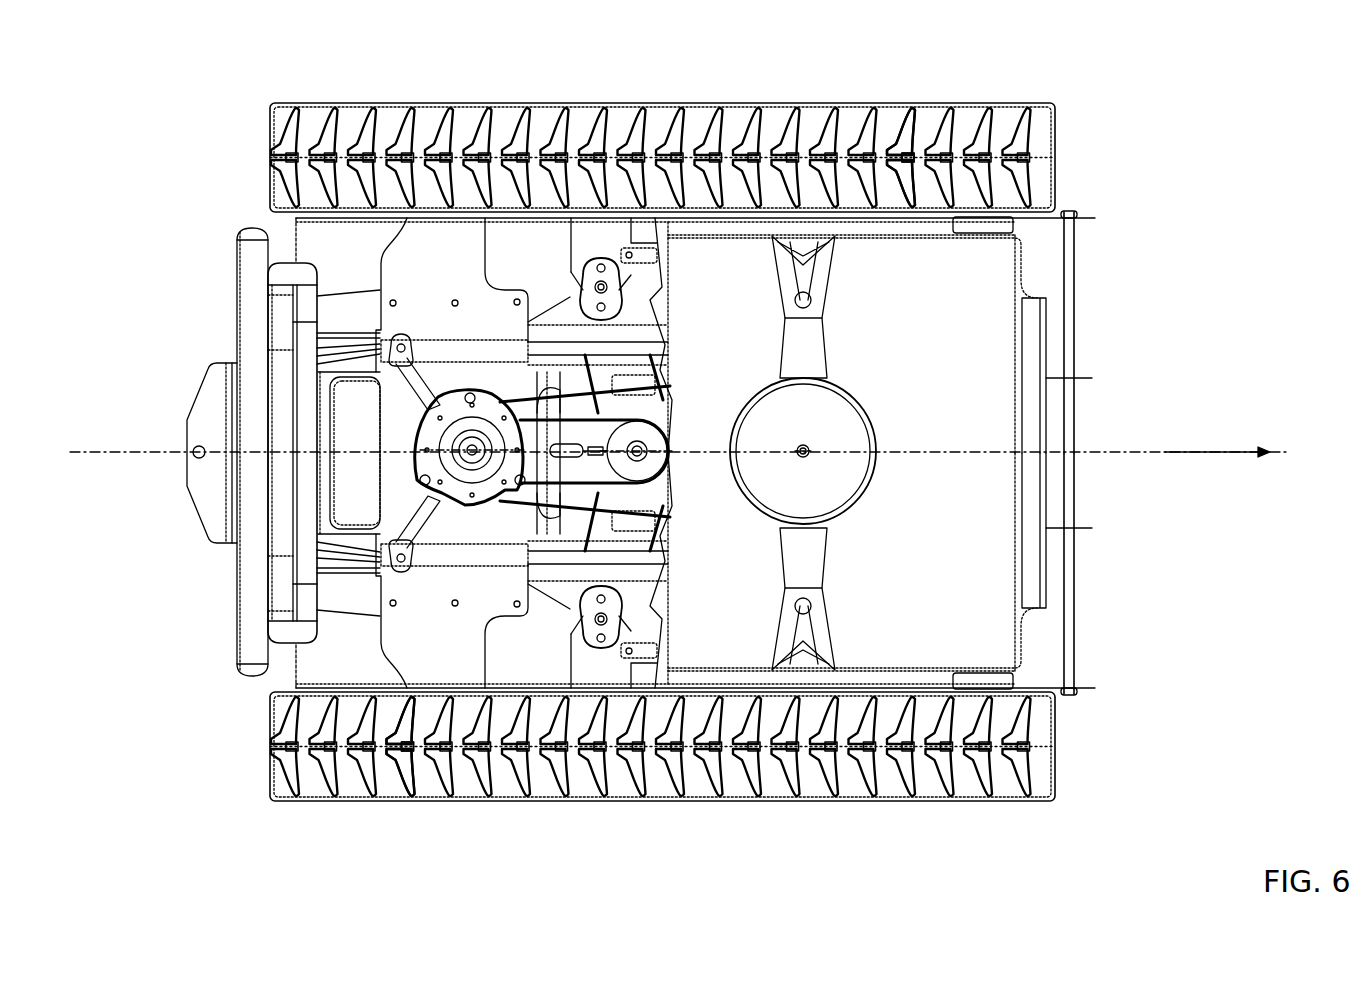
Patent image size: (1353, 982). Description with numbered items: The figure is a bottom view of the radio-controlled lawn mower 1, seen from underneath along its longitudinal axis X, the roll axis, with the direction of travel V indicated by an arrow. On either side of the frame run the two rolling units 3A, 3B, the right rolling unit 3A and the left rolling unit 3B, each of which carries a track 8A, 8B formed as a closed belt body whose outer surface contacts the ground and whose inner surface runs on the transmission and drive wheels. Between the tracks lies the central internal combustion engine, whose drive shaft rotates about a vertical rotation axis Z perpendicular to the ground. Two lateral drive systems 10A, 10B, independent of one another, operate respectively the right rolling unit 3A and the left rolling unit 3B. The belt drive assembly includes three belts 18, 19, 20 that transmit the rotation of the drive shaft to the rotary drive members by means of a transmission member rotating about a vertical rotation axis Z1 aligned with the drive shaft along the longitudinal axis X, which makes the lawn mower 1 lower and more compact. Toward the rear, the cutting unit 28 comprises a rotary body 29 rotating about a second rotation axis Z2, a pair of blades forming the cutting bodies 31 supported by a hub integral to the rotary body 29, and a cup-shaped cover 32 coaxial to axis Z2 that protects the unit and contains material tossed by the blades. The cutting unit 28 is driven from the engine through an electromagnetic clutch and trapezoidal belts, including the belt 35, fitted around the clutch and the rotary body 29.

The radio-controlled lawn mower 1 is at (138, 172).
The right rolling unit 3A is at (748, 90).
The left rolling unit 3B is at (760, 818).
The right track 8A is at (920, 145).
The left track 8B is at (400, 792).
The right lateral drive system 10A is at (562, 320).
The left lateral drive system 10B is at (562, 585).
The belt 18 is at (662, 466).
The belt 19 is at (645, 345).
The belt 20 is at (645, 562).
The cutting unit 28 is at (892, 442).
The rotary body 29 is at (848, 462).
The cutting bodies 31 is at (825, 262).
The cup-shaped cover 32 is at (776, 493).
The belt 35 is at (665, 388).
The longitudinal axis X is at (142, 452).
The direction of travel V is at (1217, 439).
The vertical rotation axis Z is at (452, 498).
The vertical rotation axis Z1 is at (655, 437).
The second rotation axis Z2 is at (815, 442).